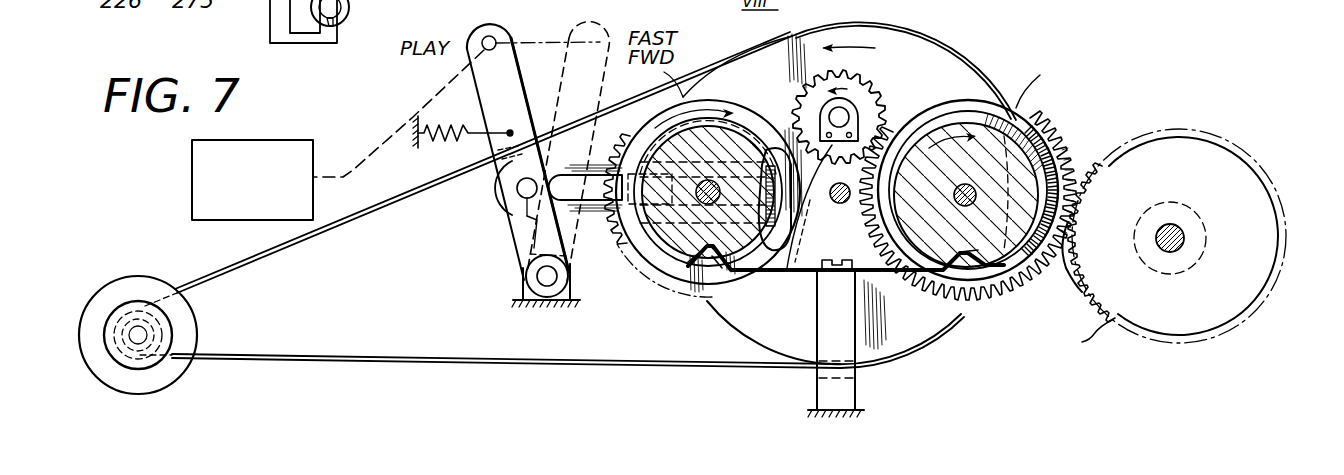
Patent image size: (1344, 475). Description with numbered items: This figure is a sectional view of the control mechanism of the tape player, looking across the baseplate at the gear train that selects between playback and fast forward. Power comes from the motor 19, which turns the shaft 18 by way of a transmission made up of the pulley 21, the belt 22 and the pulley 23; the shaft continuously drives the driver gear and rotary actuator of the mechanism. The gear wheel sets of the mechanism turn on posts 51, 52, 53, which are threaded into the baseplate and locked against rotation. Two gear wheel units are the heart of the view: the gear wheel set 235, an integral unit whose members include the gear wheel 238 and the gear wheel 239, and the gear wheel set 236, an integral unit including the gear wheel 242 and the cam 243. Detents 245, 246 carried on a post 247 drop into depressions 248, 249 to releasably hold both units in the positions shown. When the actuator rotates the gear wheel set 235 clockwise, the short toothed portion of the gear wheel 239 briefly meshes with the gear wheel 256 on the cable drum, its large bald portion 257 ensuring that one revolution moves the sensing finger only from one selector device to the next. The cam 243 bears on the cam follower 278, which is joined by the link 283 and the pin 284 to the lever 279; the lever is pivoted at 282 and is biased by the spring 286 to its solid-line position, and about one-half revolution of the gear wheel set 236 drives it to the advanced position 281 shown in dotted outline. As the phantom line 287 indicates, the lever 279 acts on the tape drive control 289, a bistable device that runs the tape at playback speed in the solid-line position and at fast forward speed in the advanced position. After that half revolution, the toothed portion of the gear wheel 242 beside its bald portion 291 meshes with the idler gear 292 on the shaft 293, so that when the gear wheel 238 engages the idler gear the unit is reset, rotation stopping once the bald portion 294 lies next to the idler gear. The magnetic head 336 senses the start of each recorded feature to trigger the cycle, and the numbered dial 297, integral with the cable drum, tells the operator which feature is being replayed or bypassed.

The shaft 18 is at (845, 201).
The motor 19 is at (167, 284).
The pulley 21 is at (134, 300).
The belt 22 is at (308, 357).
The pulley 23 is at (974, 94).
The post 51 is at (956, 190).
The post 52 is at (625, 190).
The post 53 is at (1172, 224).
The gear wheel set 235 is at (948, 106).
The gear wheel set 236 is at (747, 98).
The gear wheel 238 is at (976, 296).
The gear wheel 239 is at (1060, 132).
The gear wheel 242 is at (628, 250).
The cam 243 is at (622, 152).
The detent 245 is at (946, 322).
The detent 246 is at (712, 266).
The post 247 is at (818, 336).
The depression 248 is at (966, 250).
The depression 249 is at (690, 262).
The gear wheel 256 is at (1096, 334).
The bald portion 257 is at (1080, 302).
The cam follower 278 is at (788, 282).
The lever 279 is at (513, 60).
The advanced position 281 is at (560, 106).
The pivot 282 is at (526, 280).
The link 283 is at (496, 204).
The pin 284 is at (518, 232).
The spring 286 is at (430, 132).
The phantom line 287 is at (445, 92).
The tape drive control 289 is at (282, 140).
The bald portion 291 is at (664, 80).
The idler gear 292 is at (841, 117).
The shaft 293 is at (872, 98).
The bald portion 294 is at (1015, 112).
The dial 297 is at (1232, 170).
The magnetic head 336 is at (349, 10).